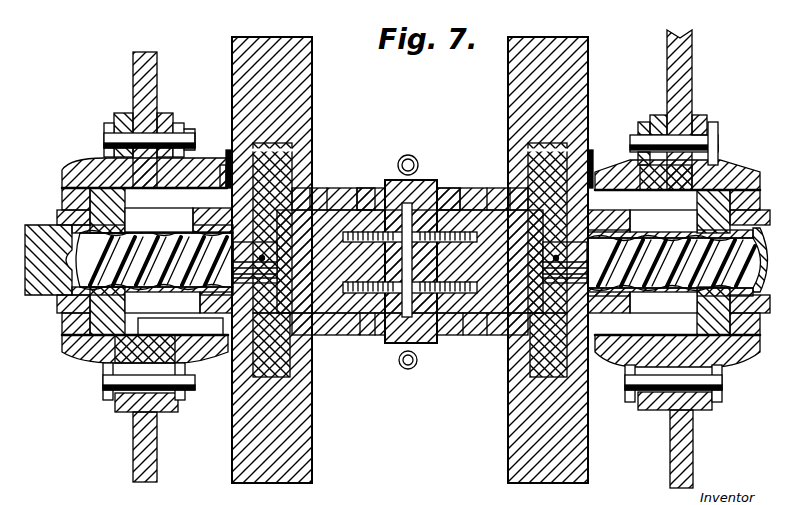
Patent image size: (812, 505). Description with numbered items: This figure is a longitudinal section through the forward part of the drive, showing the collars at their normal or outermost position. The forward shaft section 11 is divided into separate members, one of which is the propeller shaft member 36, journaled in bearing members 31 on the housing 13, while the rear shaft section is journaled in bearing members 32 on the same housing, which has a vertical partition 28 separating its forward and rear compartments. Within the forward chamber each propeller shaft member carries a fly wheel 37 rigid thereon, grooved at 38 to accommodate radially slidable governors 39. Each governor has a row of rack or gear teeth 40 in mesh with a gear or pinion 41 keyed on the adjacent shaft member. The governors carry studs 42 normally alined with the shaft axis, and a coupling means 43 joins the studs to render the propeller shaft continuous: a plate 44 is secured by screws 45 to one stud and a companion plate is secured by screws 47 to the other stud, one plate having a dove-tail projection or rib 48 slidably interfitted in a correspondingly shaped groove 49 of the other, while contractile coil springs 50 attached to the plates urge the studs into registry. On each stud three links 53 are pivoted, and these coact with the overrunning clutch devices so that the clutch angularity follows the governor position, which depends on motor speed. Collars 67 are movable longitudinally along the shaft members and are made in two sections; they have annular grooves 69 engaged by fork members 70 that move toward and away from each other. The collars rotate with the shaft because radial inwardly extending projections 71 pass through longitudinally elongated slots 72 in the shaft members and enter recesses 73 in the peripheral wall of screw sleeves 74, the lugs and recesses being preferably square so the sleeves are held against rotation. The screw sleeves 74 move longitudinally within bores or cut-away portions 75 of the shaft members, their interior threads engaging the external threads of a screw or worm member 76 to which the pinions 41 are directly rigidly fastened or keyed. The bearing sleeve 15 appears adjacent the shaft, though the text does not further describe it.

The forward shaft section 11 is at (223, 168).
The housing 13 is at (133, 76).
The bearing sleeve 15 is at (216, 362).
The vertical partition 28 is at (690, 48).
The bearing members 31 is at (172, 113).
The bearing members 32 is at (706, 116).
The propeller shaft member 36 is at (772, 232).
The fly wheel 37 is at (525, 37).
The groove 38 is at (302, 155).
The governors 39 is at (236, 150).
The rack or gear teeth 40 is at (294, 160).
The gear or pinion 41 is at (508, 168).
The studs 42 is at (330, 188).
The coupling means 43 is at (383, 342).
The plate 44 is at (390, 182).
The screws 45 is at (366, 188).
The screws 47 is at (448, 188).
The dove-tail projection or rib 48 is at (432, 345).
The groove 49 is at (400, 344).
The contractile coil springs 50 is at (410, 154).
The links 53 is at (322, 337).
The collars 67 is at (750, 170).
The annular grooves 69 is at (92, 160).
The fork members 70 is at (712, 166).
The radial inwardly extending projections 71 is at (120, 222).
The longitudinally elongated slots 72 is at (62, 192).
The recesses 73 is at (57, 215).
The screw sleeves 74 is at (135, 290).
The bores or cut-away portions 75 is at (640, 318).
The screw or worm member 76 is at (183, 242).